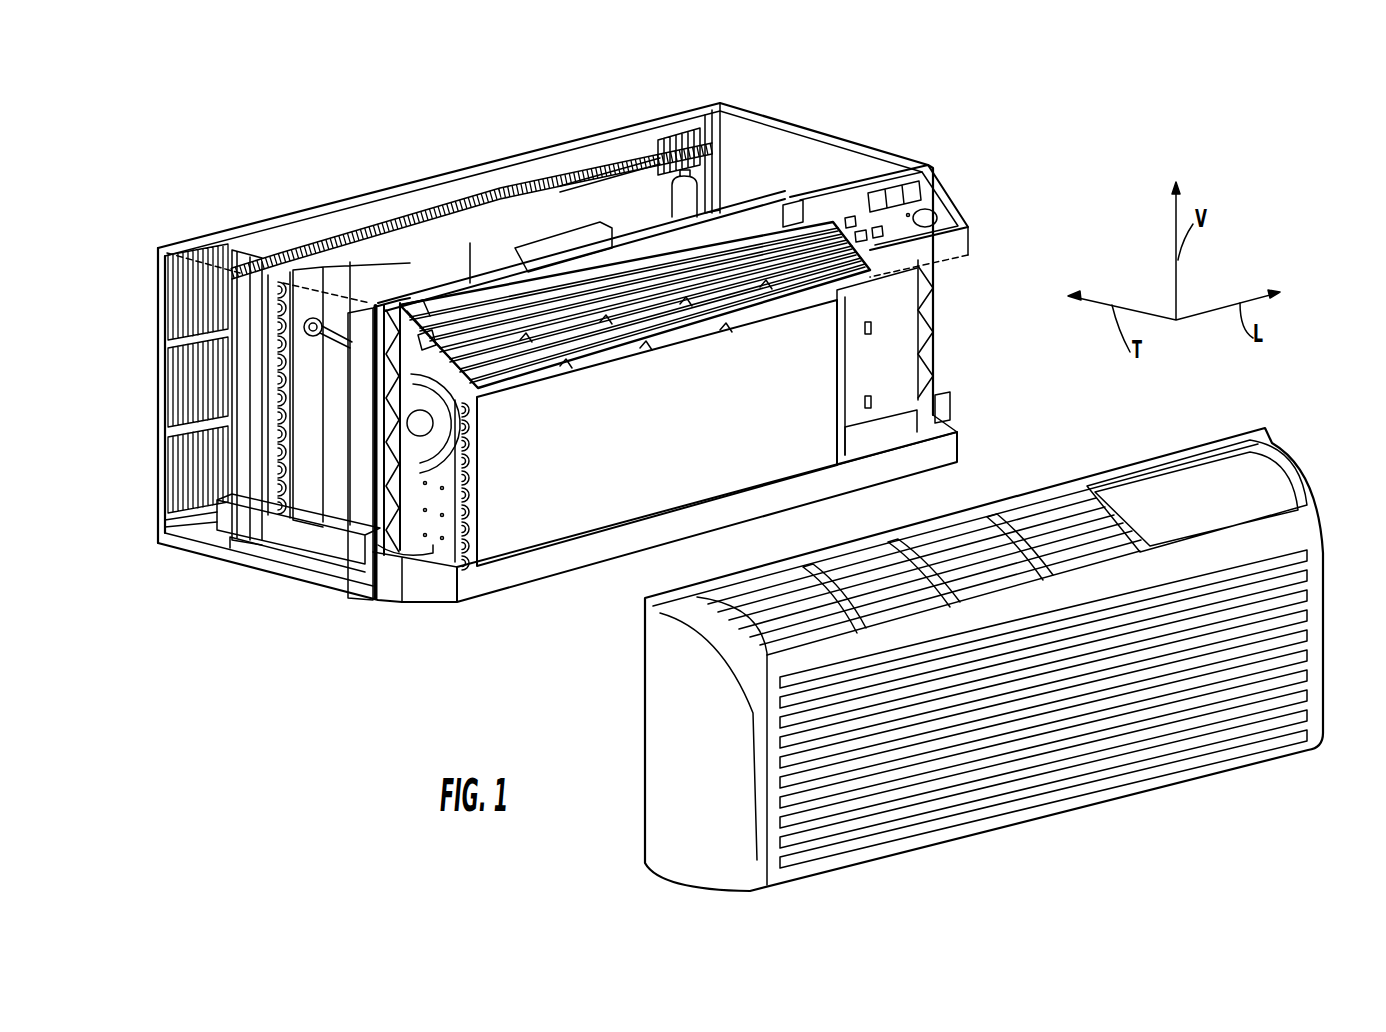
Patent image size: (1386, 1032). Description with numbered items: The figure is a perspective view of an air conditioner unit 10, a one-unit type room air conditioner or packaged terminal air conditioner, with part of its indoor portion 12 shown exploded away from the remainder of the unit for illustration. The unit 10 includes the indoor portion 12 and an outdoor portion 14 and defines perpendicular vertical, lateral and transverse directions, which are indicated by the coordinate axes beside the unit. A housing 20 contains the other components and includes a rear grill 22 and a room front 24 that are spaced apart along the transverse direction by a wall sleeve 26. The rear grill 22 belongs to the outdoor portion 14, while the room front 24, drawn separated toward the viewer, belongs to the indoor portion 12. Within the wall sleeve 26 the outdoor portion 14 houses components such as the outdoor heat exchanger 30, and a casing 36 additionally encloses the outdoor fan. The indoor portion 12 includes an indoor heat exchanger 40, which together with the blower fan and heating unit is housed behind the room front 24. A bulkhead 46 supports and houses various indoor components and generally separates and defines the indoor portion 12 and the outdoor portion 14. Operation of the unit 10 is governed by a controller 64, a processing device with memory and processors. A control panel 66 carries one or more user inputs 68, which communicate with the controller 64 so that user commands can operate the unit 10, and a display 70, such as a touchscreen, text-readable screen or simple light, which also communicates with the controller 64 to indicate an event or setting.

The air conditioner unit 10 is at (1078, 168).
The indoor portion 12 is at (427, 610).
The outdoor portion 14 is at (255, 578).
The housing 20 is at (907, 132).
The rear grill 22 is at (503, 160).
The room front 24 is at (1303, 523).
The wall sleeve 26 is at (772, 145).
The outdoor heat exchanger 30 is at (272, 440).
The casing 36 is at (430, 247).
The indoor heat exchanger 40 is at (515, 515).
The bulkhead 46 is at (377, 505).
The controller 64 is at (968, 248).
The control panel 66 is at (837, 210).
The user inputs 68 is at (850, 204).
The display 70 is at (937, 187).